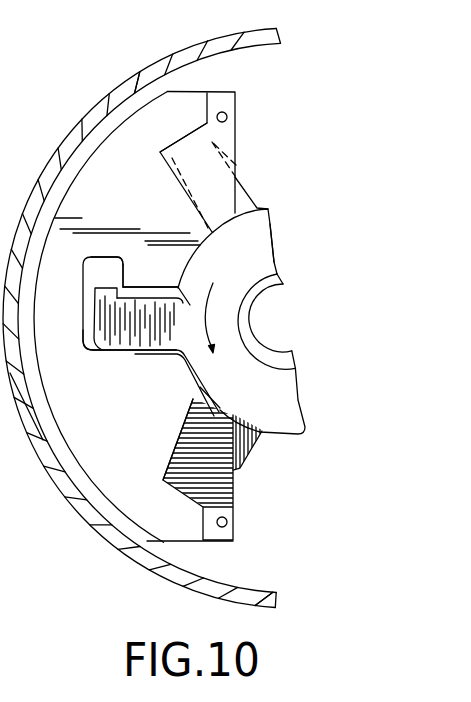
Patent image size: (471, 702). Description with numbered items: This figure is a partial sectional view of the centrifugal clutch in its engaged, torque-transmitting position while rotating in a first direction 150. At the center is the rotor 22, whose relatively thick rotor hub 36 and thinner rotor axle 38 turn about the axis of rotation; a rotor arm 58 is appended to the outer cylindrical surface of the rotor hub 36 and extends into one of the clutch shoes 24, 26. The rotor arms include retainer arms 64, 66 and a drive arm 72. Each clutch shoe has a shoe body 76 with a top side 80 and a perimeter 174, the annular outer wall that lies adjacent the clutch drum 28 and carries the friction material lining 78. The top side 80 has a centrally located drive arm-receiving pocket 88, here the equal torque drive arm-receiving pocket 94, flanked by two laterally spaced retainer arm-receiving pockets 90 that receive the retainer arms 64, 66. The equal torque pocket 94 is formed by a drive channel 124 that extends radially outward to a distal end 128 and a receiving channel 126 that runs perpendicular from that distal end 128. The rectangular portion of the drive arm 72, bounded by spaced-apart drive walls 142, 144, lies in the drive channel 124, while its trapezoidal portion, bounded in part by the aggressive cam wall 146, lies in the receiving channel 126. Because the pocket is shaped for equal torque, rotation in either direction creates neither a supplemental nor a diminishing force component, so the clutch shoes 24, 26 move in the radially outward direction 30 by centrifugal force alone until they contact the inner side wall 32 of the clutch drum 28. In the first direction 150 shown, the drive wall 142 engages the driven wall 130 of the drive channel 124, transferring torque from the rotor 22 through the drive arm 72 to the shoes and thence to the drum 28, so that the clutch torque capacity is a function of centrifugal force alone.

The rotor 22 is at (289, 214).
The clutch shoe 24 is at (135, 477).
The clutch shoe 26 is at (180, 581).
The clutch drum 28 is at (200, 50).
The radially outward direction 30 is at (48, 321).
The inner side wall 32 is at (237, 50).
The rotor hub 36 is at (258, 245).
The rotor axle 38 is at (275, 276).
The rotor arm 58 is at (172, 153).
The retainer arm 64 is at (236, 165).
The retainer arm 66 is at (257, 442).
The drive arm 72 is at (125, 352).
The shoe body 76 is at (85, 183).
The friction material lining 78 is at (157, 543).
The top side 80 is at (102, 465).
The drive arm-receiving pocket 88 is at (111, 263).
The retainer arm-receiving pocket 90 is at (172, 148).
The equal torque drive arm-receiving pocket 94 is at (97, 261).
The drive channel 124 is at (145, 286).
The receiving channel 126 is at (88, 280).
The distal end 128 is at (126, 282).
The driven wall 130 is at (157, 357).
The drive wall 142 is at (182, 380).
The drive wall 144 is at (170, 298).
The aggressive cam wall 146 is at (97, 349).
The first direction 150 is at (258, 316).
The perimeter 174 is at (140, 103).